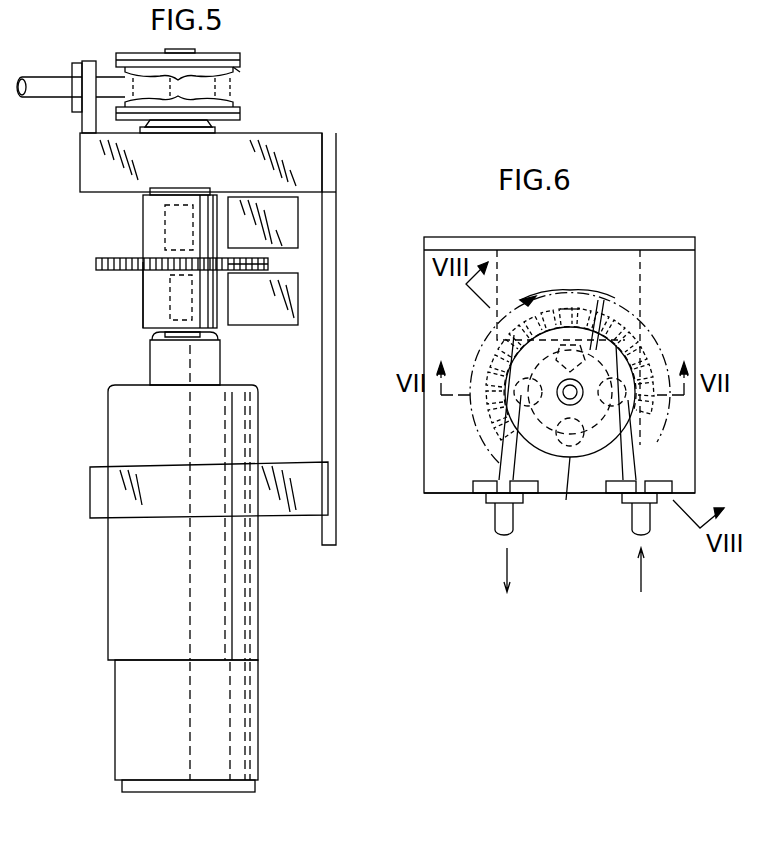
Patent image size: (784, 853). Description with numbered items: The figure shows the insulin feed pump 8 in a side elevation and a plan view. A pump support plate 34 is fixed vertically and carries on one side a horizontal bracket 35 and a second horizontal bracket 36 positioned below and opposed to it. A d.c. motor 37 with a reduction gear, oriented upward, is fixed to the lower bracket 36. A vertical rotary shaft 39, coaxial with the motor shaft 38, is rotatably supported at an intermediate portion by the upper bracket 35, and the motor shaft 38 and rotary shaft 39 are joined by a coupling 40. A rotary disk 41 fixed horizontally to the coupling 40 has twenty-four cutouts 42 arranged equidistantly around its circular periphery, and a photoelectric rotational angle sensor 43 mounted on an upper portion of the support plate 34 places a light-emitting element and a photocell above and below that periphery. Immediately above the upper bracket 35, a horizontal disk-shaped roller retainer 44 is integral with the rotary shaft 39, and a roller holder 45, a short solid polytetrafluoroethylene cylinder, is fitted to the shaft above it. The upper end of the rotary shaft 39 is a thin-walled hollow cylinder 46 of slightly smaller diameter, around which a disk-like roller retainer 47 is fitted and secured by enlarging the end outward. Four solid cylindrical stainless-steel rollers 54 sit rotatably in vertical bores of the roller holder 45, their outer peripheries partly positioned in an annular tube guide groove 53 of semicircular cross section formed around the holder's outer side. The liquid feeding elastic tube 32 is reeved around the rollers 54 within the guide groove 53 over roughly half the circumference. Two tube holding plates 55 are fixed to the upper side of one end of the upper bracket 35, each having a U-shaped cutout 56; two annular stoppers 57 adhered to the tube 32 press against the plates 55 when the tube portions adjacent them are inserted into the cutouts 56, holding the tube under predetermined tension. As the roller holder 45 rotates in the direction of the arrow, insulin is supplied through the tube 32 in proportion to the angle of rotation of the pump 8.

In FIG. 5, the insulin feed pump 8 is at (226, 128).
In FIG. 6, the insulin feed pump 8 is at (650, 336).
In FIG. 5, the liquid feeding elastic tube 32 is at (50, 74).
In FIG. 6, the liquid feeding elastic tube 32 is at (500, 530).
In FIG. 5, the pump support plate 34 is at (334, 540).
In FIG. 6, the pump support plate 34 is at (530, 240).
In FIG. 5, the horizontal bracket 35 is at (85, 162).
In FIG. 6, the horizontal bracket 35 is at (432, 484).
In FIG. 5, the horizontal bracket 36 is at (90, 488).
In FIG. 5, the d.c. motor 37 is at (120, 598).
In FIG. 5, the motor shaft 38 is at (170, 312).
In FIG. 5, the rotary shaft 39 is at (165, 228).
In FIG. 6, the rotary shaft 39 is at (570, 392).
In FIG. 5, the coupling 40 is at (143, 288).
In FIG. 5, the rotary disk 41 is at (96, 264).
In FIG. 6, the rotary disk 41 is at (498, 418).
In FIG. 5, the cutouts 42 is at (268, 262).
In FIG. 6, the cutouts 42 is at (486, 372).
In FIG. 5, the photoelectric rotational angle sensor 43 is at (264, 310).
In FIG. 6, the photoelectric rotational angle sensor 43 is at (641, 252).
In FIG. 5, the roller retainer 44 is at (240, 112).
In FIG. 5, the roller holder 45 is at (240, 72).
In FIG. 5, the hollow cylinder 46 is at (195, 50).
In FIG. 5, the roller retainer 47 is at (145, 54).
In FIG. 6, the roller retainer 47 is at (566, 500).
In FIG. 5, the tube guide groove 53 is at (240, 80).
In FIG. 6, the roller 54 is at (604, 332).
In FIG. 5, the tube holding plates 55 is at (88, 128).
In FIG. 6, the tube holding plates 55 is at (672, 485).
In FIG. 6, the U-shaped cutout 56 is at (500, 478).
In FIG. 5, the annular stoppers 57 is at (75, 62).
In FIG. 6, the annular stoppers 57 is at (518, 504).